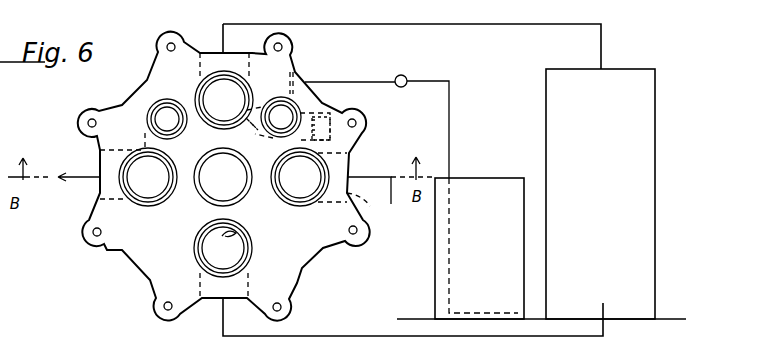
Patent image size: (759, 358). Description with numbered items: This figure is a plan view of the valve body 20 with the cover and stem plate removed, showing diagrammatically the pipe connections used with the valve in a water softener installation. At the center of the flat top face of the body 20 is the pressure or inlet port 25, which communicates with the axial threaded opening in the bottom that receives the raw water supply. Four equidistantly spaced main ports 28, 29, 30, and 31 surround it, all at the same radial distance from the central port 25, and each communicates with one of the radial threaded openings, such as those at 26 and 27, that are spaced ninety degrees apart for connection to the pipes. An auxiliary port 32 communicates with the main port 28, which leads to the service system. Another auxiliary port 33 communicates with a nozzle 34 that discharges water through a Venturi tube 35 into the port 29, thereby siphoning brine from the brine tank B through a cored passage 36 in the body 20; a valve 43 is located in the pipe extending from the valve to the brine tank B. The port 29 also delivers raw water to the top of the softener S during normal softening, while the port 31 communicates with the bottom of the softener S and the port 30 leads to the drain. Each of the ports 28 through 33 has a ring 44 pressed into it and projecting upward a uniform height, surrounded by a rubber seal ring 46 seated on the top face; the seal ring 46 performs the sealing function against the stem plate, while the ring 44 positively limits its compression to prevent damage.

The body 20 is at (143, 259).
The pressure or inlet port 25 is at (210, 191).
The radial threaded opening 26 is at (100, 193).
The radial threaded opening 27 is at (389, 209).
The main port 28 is at (143, 188).
The main port 29 is at (210, 92).
The main port 30 is at (306, 165).
The main port 31 is at (233, 260).
The auxiliary port 32 is at (160, 118).
The auxiliary port 33 is at (290, 113).
The nozzle 34 is at (333, 108).
The Venturi tube 35 is at (252, 128).
The cored passage 36 is at (296, 73).
The valve 43 is at (406, 77).
The ring 44 is at (234, 231).
The rubber seal ring 46 is at (252, 243).
The softener S is at (648, 165).
The brine tank B is at (437, 262).